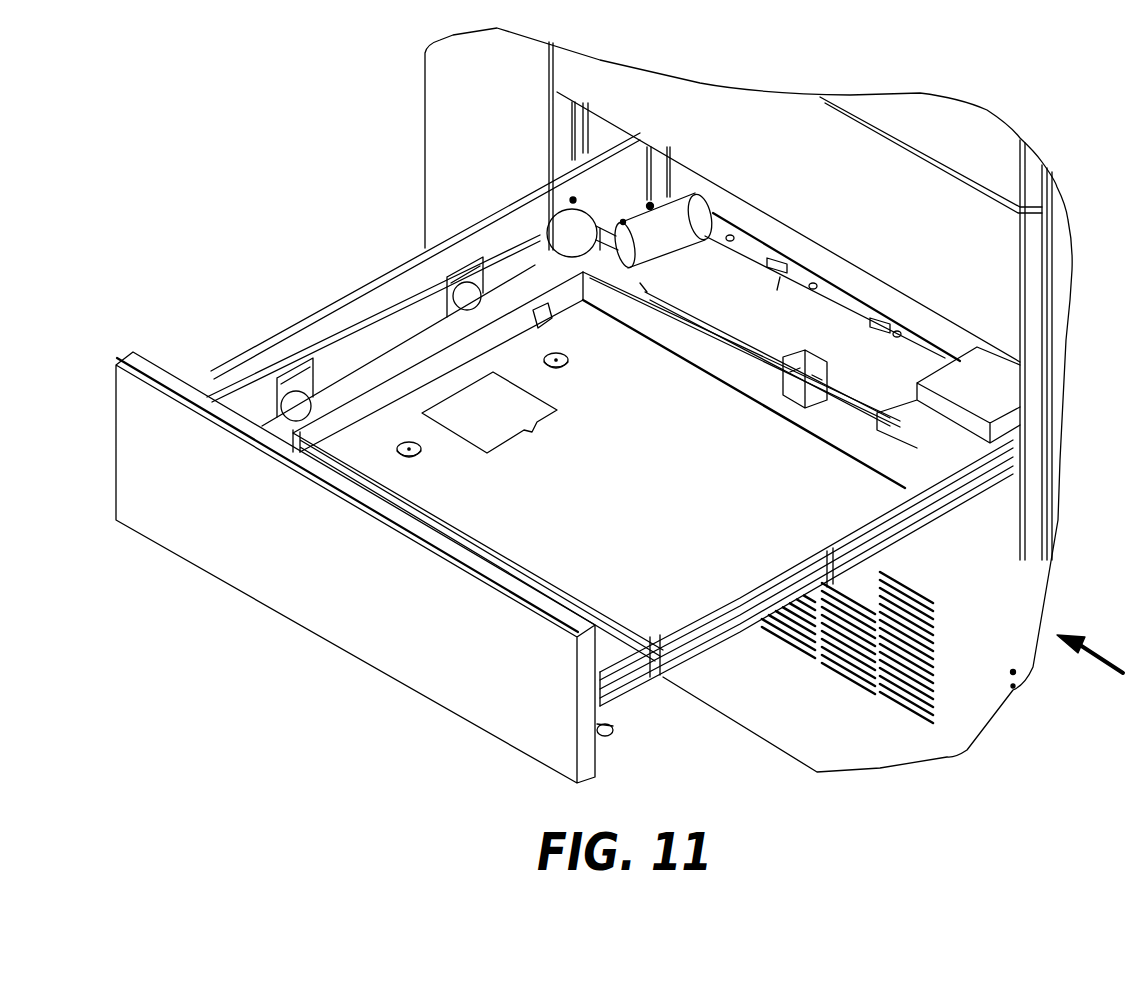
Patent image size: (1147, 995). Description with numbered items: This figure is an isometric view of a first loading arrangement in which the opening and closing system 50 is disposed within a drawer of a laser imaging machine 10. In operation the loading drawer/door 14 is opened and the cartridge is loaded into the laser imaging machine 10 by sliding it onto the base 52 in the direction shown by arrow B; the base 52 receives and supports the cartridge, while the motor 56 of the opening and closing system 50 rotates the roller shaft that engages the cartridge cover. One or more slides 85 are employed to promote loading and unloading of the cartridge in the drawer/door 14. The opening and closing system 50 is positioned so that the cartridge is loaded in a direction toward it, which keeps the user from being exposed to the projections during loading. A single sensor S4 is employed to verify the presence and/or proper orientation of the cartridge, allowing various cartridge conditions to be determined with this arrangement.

The laser imaging machine 10 is at (983, 275).
The loading drawer/door 14 is at (263, 570).
The opening and closing system 50 is at (373, 378).
The base 52 is at (545, 326).
The sensor S4 is at (563, 462).
The motor 56 is at (693, 207).
The slides 85 is at (930, 462).
The arrow B is at (1104, 657).